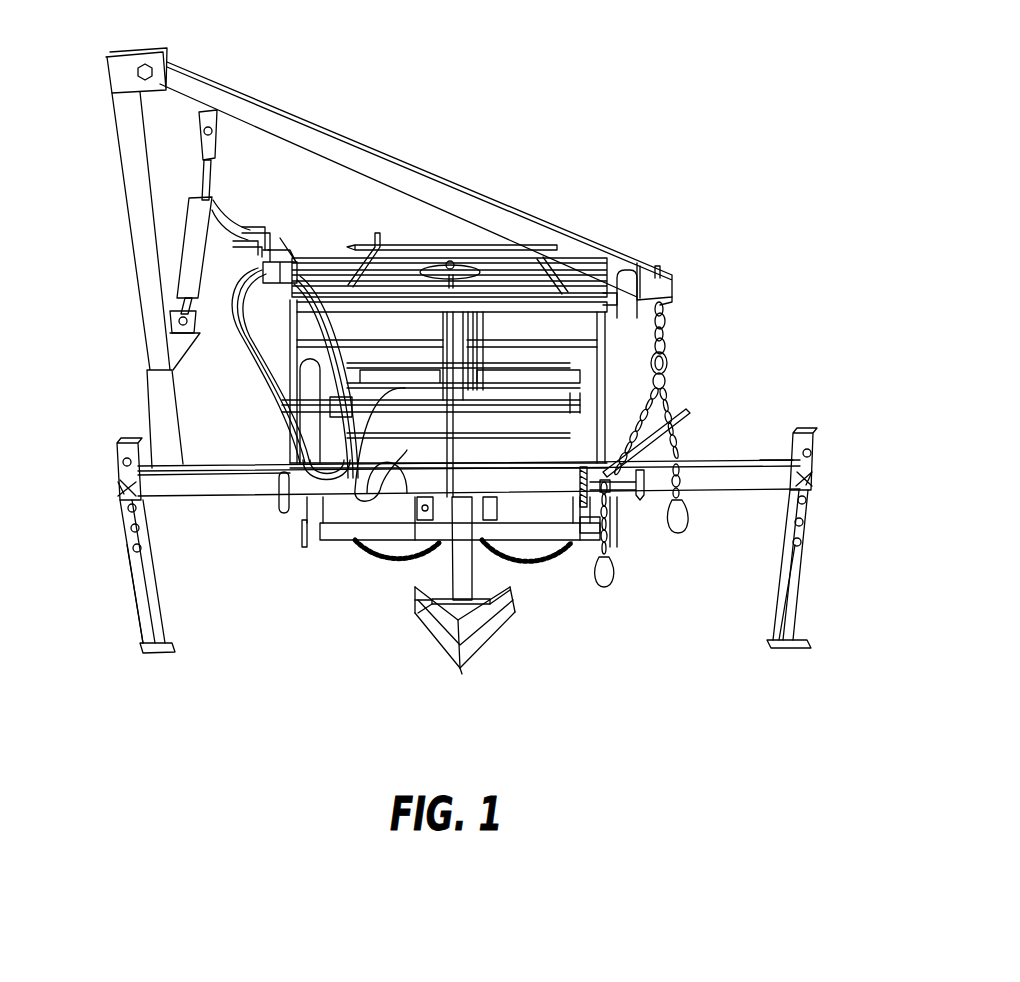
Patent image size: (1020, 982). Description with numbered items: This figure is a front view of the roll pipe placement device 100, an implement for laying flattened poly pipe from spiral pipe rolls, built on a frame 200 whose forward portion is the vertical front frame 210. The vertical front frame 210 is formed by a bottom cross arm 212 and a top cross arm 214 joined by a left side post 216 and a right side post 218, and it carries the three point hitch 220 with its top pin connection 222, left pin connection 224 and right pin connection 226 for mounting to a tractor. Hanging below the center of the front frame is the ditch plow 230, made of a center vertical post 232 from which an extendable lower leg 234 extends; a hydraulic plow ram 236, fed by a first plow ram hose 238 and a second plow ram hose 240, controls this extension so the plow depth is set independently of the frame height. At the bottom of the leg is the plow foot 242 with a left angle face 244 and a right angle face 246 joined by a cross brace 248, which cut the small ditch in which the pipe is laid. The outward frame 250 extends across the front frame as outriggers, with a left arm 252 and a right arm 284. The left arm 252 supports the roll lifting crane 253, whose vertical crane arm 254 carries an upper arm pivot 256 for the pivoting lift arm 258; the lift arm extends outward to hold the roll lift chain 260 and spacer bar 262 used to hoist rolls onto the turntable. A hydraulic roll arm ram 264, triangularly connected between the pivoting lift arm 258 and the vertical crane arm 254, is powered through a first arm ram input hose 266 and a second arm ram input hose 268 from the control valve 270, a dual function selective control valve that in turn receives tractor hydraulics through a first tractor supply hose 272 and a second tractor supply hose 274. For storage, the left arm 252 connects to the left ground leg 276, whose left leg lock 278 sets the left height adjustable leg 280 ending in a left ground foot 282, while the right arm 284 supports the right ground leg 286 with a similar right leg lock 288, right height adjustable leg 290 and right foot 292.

The roll pipe placement device 100 is at (617, 140).
The frame 200 is at (662, 330).
The vertical front frame 210 is at (287, 382).
The bottom cross arm 212 is at (477, 440).
The top cross arm 214 is at (632, 275).
The left side post 216 is at (283, 397).
The right side post 218 is at (662, 366).
The three point hitch 220 is at (490, 330).
The top pin connection 222 is at (468, 332).
The left pin connection 224 is at (293, 496).
The right pin connection 226 is at (622, 493).
The ditch plow 230 is at (470, 668).
The center vertical post 232 is at (465, 455).
The extendable lower leg 234 is at (450, 565).
The hydraulic plow ram 236 is at (500, 470).
The first plow ram hose 238 is at (400, 503).
The second plow ram hose 240 is at (398, 470).
The plow foot 242 is at (417, 617).
The left angle face 244 is at (443, 645).
The right angle face 246 is at (474, 658).
The cross brace 248 is at (470, 603).
The outward frame 250 is at (252, 499).
The left arm 252 is at (225, 497).
The roll lifting crane 253 is at (668, 280).
The vertical crane arm 254 is at (150, 403).
The upper arm pivot 256 is at (148, 52).
The pivoting lift arm 258 is at (400, 165).
The roll lift chain 260 is at (662, 345).
The spacer bar 262 is at (693, 440).
The hydraulic roll arm ram 264 is at (253, 245).
The first arm ram input hose 266 is at (240, 215).
The second arm ram input hose 268 is at (203, 283).
The control valve 270 is at (290, 250).
The first tractor supply hose 272 is at (287, 258).
The second tractor supply hose 274 is at (270, 253).
The left ground leg 276 is at (127, 522).
The left leg lock 278 is at (125, 485).
The left height adjustable leg 280 is at (140, 600).
The left ground foot 282 is at (142, 650).
The right arm 284 is at (770, 459).
The right ground leg 286 is at (805, 525).
The right leg lock 288 is at (810, 478).
The right height adjustable leg 290 is at (790, 592).
The right foot 292 is at (797, 648).